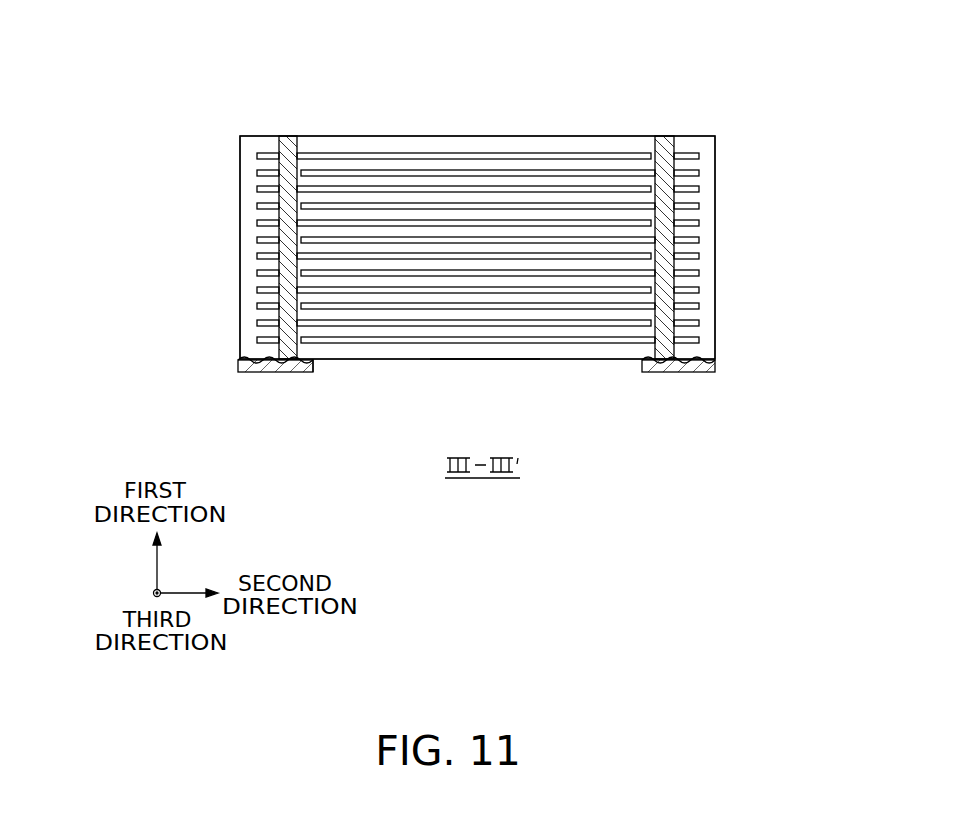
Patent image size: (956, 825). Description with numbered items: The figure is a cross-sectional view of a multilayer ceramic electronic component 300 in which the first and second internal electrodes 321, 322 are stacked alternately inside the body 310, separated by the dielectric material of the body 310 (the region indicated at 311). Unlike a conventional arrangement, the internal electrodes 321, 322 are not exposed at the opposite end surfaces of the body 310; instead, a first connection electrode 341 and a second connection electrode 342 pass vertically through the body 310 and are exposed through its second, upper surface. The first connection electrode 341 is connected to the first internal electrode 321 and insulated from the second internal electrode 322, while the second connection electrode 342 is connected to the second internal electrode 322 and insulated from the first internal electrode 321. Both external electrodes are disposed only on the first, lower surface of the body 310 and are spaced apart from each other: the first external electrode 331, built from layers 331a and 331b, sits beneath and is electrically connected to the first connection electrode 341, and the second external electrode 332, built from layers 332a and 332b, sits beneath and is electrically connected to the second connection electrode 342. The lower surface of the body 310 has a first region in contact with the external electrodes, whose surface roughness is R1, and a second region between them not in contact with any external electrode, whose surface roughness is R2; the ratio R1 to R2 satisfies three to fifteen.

The multilayer ceramic electronic component 300 is at (245, 62).
The body 310 is at (437, 136).
The dielectric layer 311 is at (260, 233).
The first internal electrode 321 is at (258, 153).
The second internal electrode 322 is at (258, 173).
The first connection electrode 341 is at (286, 263).
The second connection electrode 342 is at (672, 249).
The first external electrode 331 is at (251, 408).
The layer of the first external electrode 331a is at (240, 360).
The layer of the first external electrode 331b is at (276, 390).
The second external electrode 332 is at (703, 407).
The layer of the second external electrode 332a is at (716, 360).
The layer of the second external electrode 332b is at (677, 388).
The surface roughness of the first region R1 is at (313, 362).
The surface roughness of the second region R2 is at (483, 360).